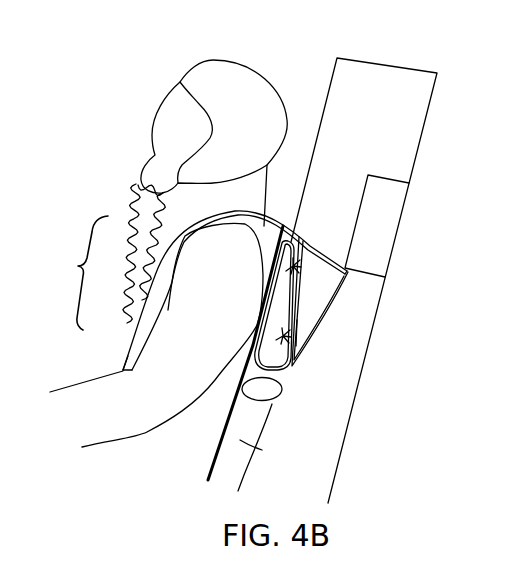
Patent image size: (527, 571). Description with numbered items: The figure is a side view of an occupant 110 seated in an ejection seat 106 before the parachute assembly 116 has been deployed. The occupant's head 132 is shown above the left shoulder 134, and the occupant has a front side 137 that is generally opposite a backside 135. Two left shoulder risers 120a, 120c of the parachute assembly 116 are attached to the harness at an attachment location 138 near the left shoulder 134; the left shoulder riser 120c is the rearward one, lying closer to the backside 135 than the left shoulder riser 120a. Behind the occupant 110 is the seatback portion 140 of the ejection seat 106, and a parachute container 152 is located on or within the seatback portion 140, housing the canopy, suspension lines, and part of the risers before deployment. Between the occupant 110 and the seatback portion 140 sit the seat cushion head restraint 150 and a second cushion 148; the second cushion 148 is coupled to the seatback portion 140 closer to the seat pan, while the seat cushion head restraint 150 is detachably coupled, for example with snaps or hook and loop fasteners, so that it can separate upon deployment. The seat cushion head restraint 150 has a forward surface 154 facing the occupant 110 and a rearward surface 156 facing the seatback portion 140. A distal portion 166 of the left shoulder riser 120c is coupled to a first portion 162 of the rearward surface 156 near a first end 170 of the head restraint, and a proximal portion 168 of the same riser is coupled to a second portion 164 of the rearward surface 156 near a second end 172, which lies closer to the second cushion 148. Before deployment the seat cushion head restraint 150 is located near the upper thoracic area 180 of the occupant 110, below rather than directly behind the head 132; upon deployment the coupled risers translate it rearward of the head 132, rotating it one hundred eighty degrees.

The ejection seat 106 is at (422, 84).
The occupant 110 is at (167, 80).
The parachute assembly 116 is at (328, 175).
The left shoulder riser 120a is at (330, 258).
The left shoulder riser 120c is at (339, 291).
The head 132 is at (243, 108).
The left shoulder 134 is at (230, 248).
The backside 135 is at (244, 395).
The front side 137 is at (128, 352).
The attachment location 138 is at (175, 241).
The seatback portion 140 is at (390, 128).
The second cushion 148 is at (240, 440).
The seat cushion head restraint 150 is at (282, 291).
The parachute container 152 is at (390, 183).
The forward surface 154 is at (264, 309).
The rearward surface 156 is at (291, 311).
The first portion 162 is at (284, 268).
The second portion 164 is at (277, 338).
The distal portion 166 is at (296, 261).
The proximal portion 168 is at (286, 338).
The first end 170 is at (291, 242).
The second end 172 is at (268, 371).
The upper thoracic area 180 is at (78, 265).